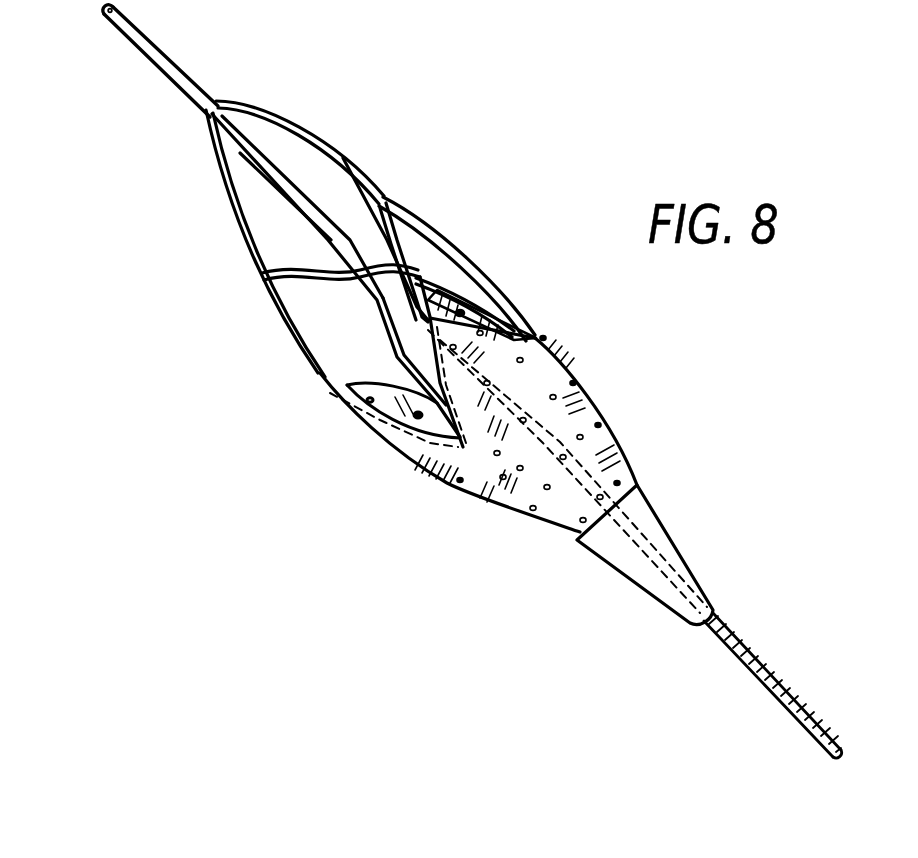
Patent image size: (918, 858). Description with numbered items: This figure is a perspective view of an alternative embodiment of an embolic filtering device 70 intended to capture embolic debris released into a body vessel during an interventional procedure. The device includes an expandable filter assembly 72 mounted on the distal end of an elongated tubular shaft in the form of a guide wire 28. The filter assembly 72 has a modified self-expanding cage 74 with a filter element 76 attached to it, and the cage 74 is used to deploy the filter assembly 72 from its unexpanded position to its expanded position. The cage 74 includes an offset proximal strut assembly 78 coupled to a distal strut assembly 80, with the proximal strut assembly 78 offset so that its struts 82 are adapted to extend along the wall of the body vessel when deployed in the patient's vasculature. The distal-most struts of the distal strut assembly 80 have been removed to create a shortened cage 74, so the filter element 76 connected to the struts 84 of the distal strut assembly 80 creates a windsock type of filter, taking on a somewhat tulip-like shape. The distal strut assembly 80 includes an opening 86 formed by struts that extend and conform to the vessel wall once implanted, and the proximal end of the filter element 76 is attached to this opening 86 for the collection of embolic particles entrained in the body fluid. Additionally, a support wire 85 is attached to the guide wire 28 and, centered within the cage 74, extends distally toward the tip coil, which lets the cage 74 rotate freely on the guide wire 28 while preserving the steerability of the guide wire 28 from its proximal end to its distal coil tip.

The guide wire 28 is at (181, 82).
The embolic filtering device 70 is at (443, 210).
The expandable filter assembly 72 is at (241, 246).
The self-expanding cage 74 is at (285, 352).
The filter element 76 is at (603, 443).
The proximal strut assembly 78 is at (377, 178).
The distal strut assembly 80 is at (468, 259).
The struts 82 is at (336, 158).
The struts 84 is at (387, 423).
The support wire 85 is at (253, 153).
The opening 86 is at (535, 338).